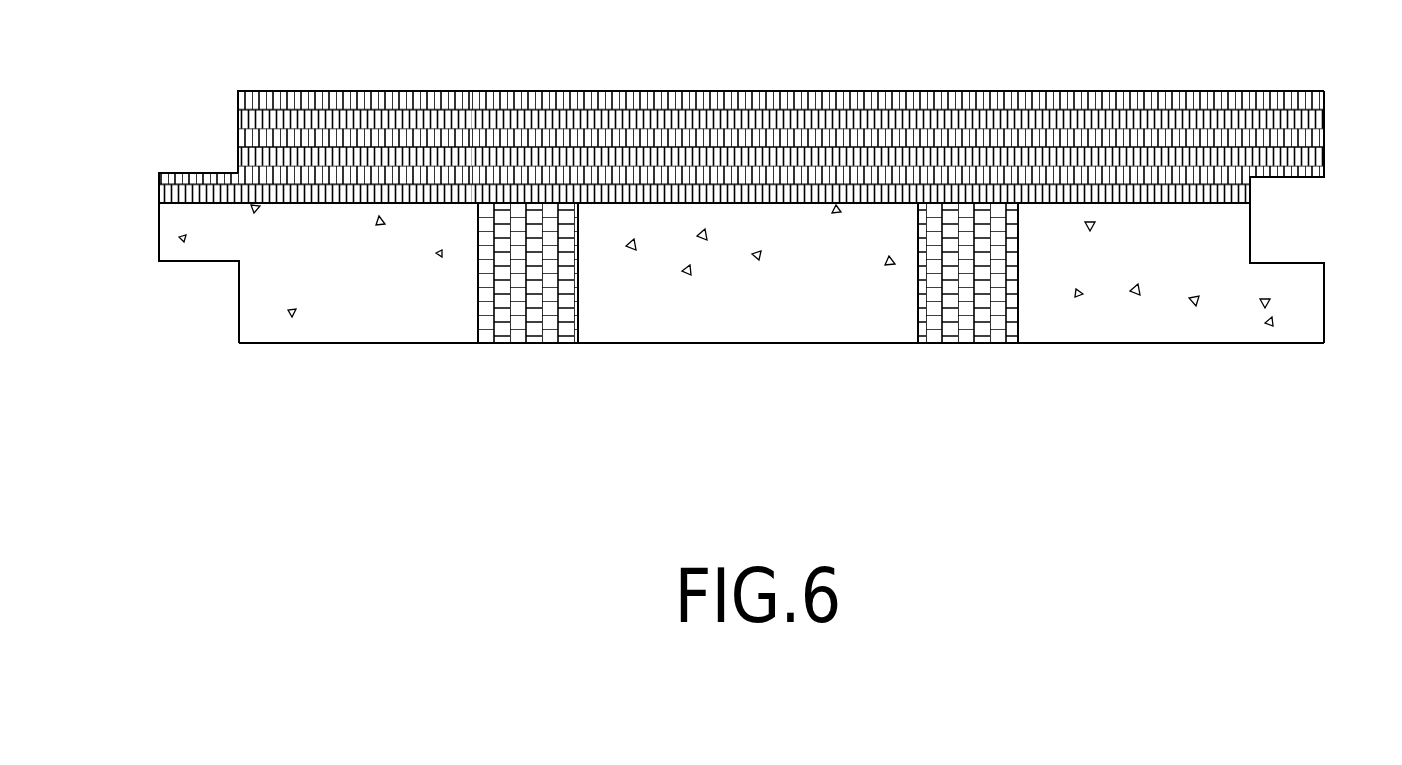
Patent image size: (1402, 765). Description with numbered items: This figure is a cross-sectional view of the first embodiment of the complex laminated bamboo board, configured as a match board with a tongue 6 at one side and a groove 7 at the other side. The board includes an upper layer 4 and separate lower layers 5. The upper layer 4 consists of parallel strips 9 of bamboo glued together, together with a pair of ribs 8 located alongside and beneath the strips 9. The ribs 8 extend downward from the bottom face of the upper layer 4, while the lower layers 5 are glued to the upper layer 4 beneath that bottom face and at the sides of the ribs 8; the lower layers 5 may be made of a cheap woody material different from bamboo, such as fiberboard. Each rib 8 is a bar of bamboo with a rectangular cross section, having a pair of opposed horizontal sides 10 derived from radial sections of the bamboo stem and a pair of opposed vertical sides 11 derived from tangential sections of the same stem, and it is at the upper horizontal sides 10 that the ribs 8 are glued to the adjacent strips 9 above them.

The upper layer 4 is at (238, 133).
The lower layer 5 is at (239, 302).
The tongue 6 is at (159, 217).
The groove 7 is at (1292, 220).
The rib 8 is at (529, 343).
The strip 9 is at (592, 120).
The horizontal side 10 is at (950, 210).
The vertical side 11 is at (1018, 275).